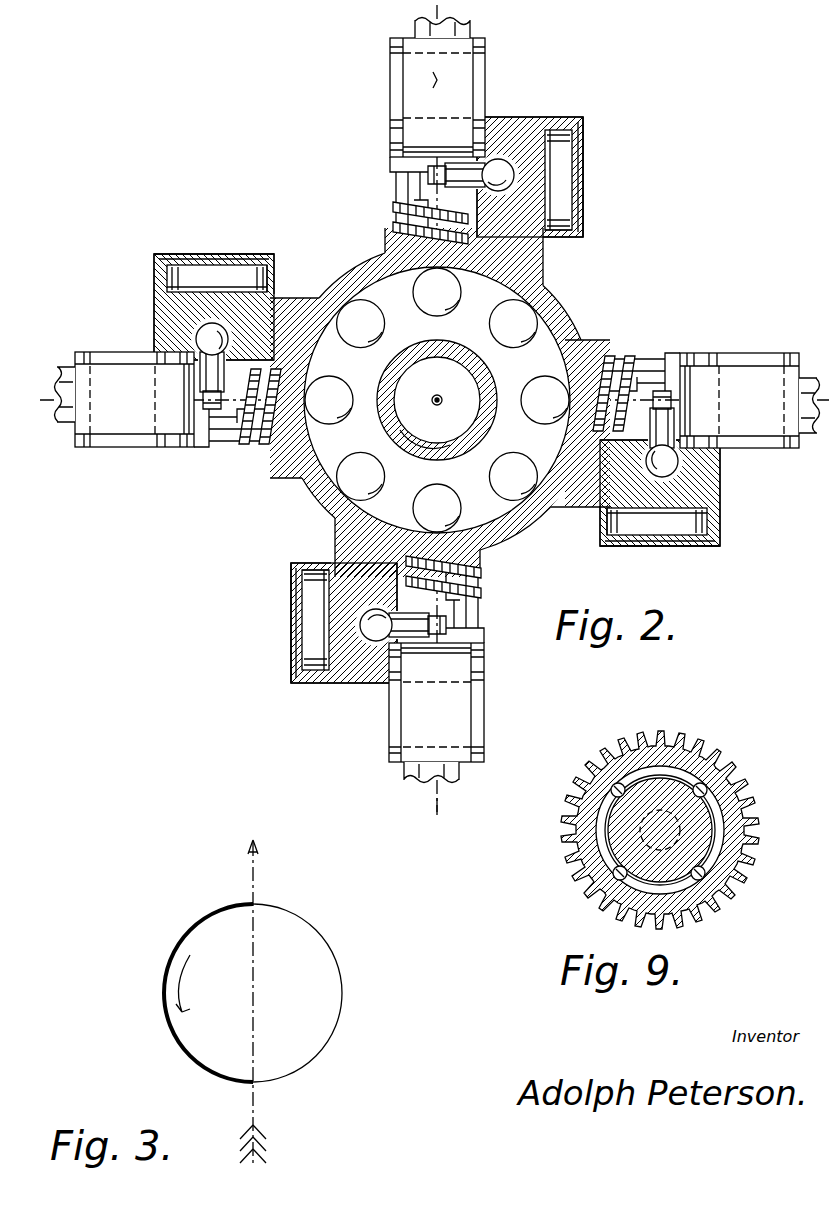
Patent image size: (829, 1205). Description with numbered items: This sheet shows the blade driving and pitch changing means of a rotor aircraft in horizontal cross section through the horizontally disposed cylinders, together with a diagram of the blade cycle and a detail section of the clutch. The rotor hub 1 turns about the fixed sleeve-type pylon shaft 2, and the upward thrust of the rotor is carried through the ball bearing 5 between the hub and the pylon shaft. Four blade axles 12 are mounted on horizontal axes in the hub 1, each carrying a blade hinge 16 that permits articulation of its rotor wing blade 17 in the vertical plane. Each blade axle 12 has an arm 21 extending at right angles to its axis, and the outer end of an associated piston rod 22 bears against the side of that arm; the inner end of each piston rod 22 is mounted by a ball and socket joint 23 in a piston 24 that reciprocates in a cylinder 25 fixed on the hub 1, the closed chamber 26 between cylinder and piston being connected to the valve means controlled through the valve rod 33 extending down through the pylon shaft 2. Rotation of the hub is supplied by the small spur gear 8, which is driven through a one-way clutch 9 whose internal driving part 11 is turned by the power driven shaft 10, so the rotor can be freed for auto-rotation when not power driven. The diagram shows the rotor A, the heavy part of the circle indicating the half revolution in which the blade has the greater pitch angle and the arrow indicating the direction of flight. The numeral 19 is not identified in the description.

In FIG. 2, the rotor hub 1 is at (555, 292).
In FIG. 2, the pylon shaft 2 is at (398, 362).
In FIG. 2, the ball bearing 5 is at (440, 298).
In FIG. 9, the small spur gear 8 is at (756, 853).
In FIG. 9, the one-way clutch 9 is at (724, 795).
In FIG. 2, the power driven shaft 10 is at (437, 80).
In FIG. 9, the power driven shaft 10 is at (640, 835).
In FIG. 9, the internal driving part 11 is at (728, 808).
In FIG. 2, the blade axle 12 is at (412, 186).
In FIG. 2, the blade hinge 16 is at (485, 97).
In FIG. 2, the rotor wing blade 17 is at (470, 30).
In FIG. 2, the threaded collar 19 is at (252, 445).
In FIG. 2, the arm 21 is at (428, 172).
In FIG. 2, the piston rod 22 is at (470, 177).
In FIG. 2, the ball and socket joint 23 is at (562, 160).
In FIG. 2, the piston 24 is at (538, 120).
In FIG. 2, the cylinder 25 is at (583, 136).
In FIG. 2, the closed chamber 26 is at (572, 208).
In FIG. 2, the valve rod 33 is at (440, 402).
In FIG. 2, the rotor A is at (300, 510).